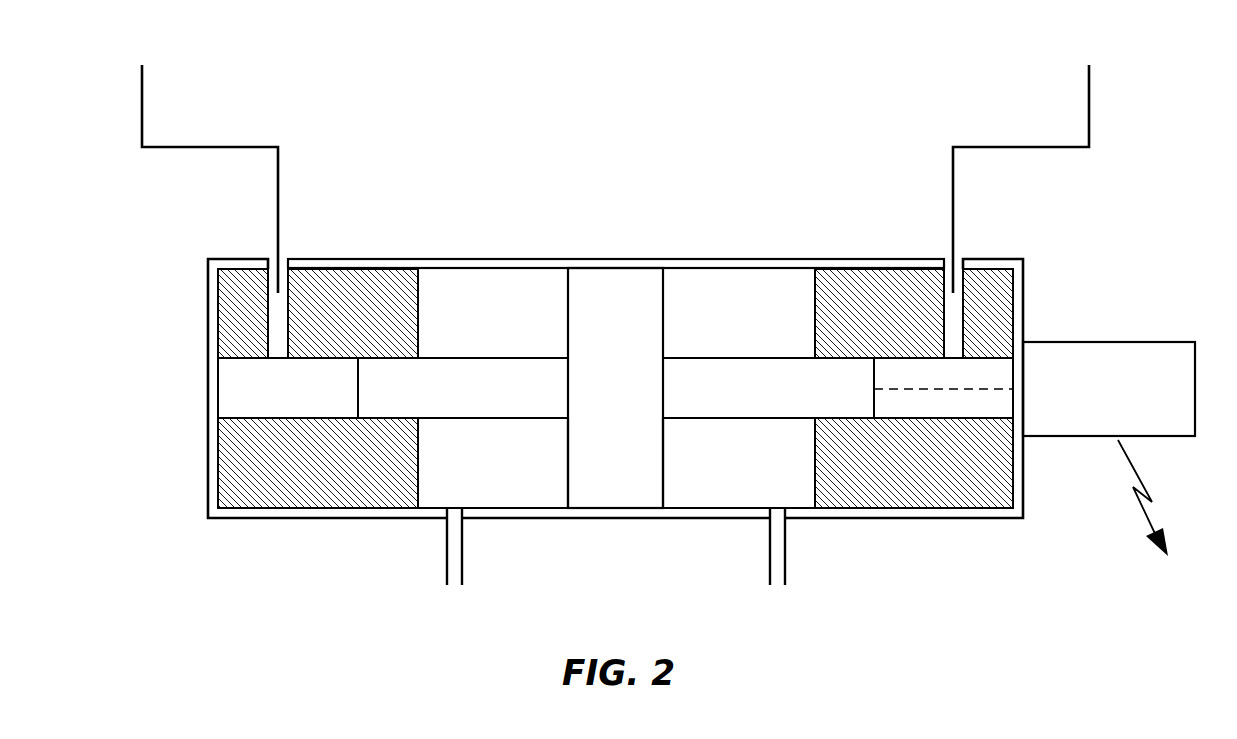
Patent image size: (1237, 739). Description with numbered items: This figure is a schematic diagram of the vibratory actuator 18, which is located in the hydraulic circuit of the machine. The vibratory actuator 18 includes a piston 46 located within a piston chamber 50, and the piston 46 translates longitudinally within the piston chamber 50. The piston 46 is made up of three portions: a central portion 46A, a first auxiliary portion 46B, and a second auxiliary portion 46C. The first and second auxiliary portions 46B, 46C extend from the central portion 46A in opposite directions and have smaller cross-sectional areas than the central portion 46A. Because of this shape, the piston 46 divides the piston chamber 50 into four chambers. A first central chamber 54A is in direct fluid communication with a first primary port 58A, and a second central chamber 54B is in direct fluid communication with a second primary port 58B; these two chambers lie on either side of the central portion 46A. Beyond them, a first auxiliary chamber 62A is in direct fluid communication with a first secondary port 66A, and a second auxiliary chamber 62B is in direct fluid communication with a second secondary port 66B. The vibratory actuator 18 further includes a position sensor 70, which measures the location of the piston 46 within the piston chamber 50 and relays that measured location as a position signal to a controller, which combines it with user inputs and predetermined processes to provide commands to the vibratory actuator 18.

The vibratory actuator 18 is at (624, 133).
The piston 46 is at (615, 290).
The central portion 46A is at (613, 487).
The first auxiliary portion 46B is at (482, 383).
The second auxiliary portion 46C is at (750, 383).
The piston chamber 50 is at (725, 257).
The first central chamber 54A is at (497, 508).
The second central chamber 54B is at (742, 508).
The first primary port 58A is at (447, 552).
The second primary port 58B is at (786, 552).
The first auxiliary chamber 62A is at (220, 397).
The second auxiliary chamber 62B is at (933, 418).
The first secondary port 66A is at (277, 222).
The second secondary port 66B is at (955, 239).
The position sensor 70 is at (1105, 342).